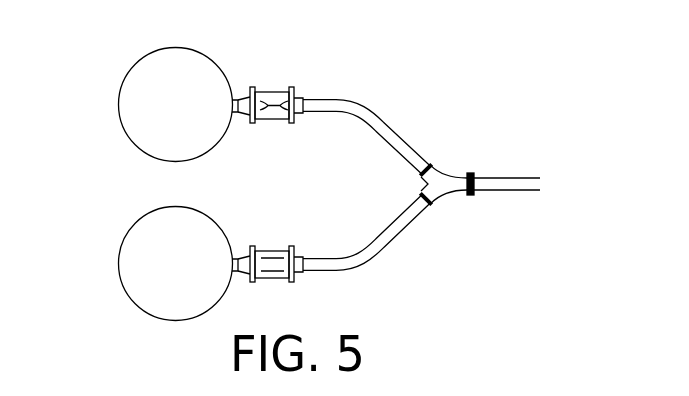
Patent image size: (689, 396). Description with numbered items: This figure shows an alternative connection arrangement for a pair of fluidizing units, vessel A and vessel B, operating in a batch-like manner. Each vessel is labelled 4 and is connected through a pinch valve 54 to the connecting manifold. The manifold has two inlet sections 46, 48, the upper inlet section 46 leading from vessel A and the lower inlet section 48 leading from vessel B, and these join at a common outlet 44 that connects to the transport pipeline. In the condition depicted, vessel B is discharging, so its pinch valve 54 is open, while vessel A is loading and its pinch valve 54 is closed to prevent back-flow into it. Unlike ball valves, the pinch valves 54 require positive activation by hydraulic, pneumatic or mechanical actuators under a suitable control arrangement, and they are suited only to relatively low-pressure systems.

The fluid container 4 is at (118, 108).
The pinch valve 54 is at (270, 92).
The inlet section 46 is at (362, 99).
The inlet section 48 is at (362, 272).
The common outlet 44 is at (513, 178).